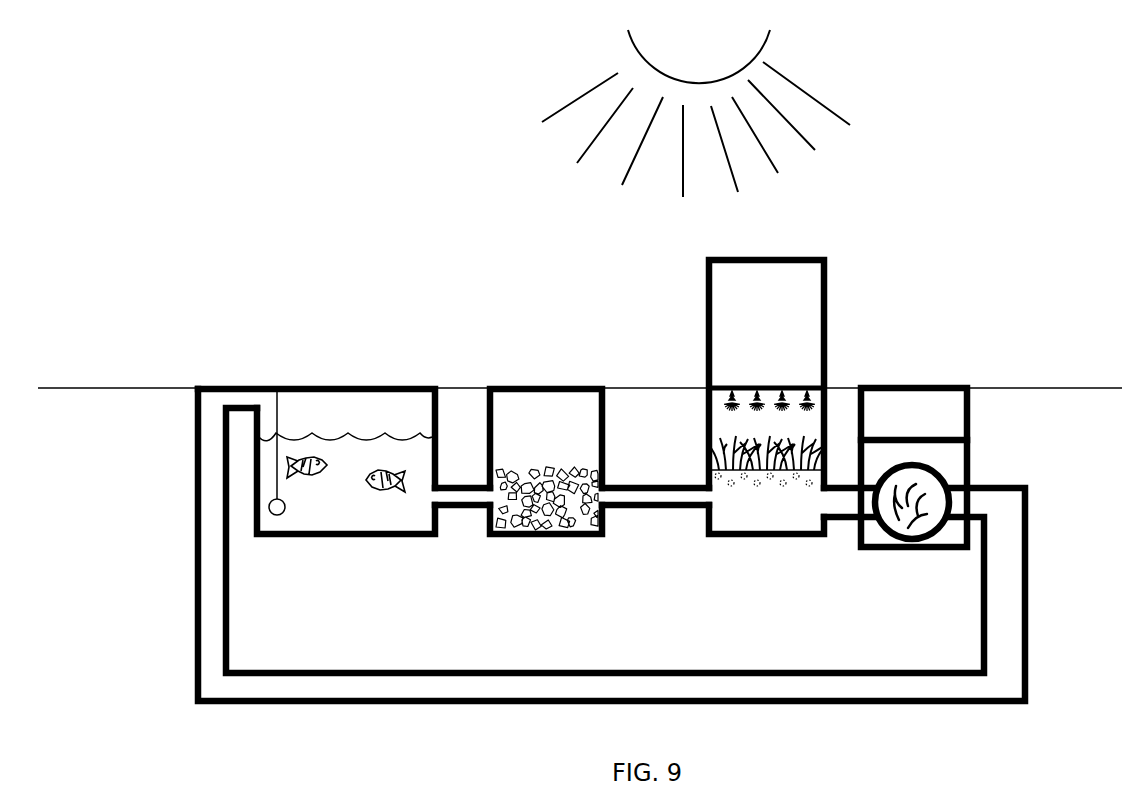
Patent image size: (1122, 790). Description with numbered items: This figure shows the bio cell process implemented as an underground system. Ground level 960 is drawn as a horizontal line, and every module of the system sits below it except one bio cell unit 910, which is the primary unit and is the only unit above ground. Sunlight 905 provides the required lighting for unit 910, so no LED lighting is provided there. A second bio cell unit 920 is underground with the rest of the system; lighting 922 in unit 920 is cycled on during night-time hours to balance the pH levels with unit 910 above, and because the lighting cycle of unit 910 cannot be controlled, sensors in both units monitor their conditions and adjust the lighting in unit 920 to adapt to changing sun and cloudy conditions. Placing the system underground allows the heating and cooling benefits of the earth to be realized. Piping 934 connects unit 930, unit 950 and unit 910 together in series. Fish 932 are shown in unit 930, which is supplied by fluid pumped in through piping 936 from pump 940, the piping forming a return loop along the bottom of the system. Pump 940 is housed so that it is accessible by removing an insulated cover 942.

The sunlight 905 is at (588, 145).
The bio cell unit 910 is at (762, 374).
The bio cell unit 920 is at (723, 518).
The lighting 922 is at (820, 386).
The unit 930 is at (316, 421).
The fish 932 is at (382, 490).
The piping 934 is at (448, 508).
The piping 936 is at (458, 705).
The pump 940 is at (913, 539).
The insulated cover 942 is at (920, 405).
The unit 950 is at (545, 410).
The ground level 960 is at (1053, 388).